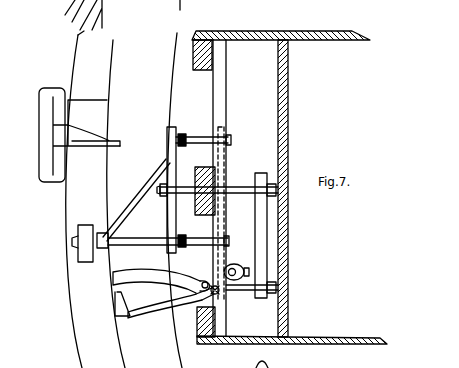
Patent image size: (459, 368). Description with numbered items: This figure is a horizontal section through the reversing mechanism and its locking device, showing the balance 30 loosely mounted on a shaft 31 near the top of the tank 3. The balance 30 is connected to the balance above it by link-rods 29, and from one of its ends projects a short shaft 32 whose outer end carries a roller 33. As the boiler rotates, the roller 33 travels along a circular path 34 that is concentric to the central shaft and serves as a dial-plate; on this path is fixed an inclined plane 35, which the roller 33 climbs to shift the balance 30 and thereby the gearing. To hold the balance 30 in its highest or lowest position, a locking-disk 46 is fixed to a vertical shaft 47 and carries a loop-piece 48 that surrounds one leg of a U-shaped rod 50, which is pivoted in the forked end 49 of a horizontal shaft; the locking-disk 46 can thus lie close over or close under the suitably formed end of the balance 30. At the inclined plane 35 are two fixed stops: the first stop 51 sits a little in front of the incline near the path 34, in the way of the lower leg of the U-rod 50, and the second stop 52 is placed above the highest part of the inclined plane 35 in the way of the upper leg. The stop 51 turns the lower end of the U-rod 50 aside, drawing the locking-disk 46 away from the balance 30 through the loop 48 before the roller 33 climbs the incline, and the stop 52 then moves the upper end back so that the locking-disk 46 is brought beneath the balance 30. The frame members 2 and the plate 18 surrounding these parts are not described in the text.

The top frame plate 18 is at (336, 31).
The frame 2 is at (199, 71).
The tank 3 is at (167, 103).
The inclined plane 35 is at (79, 135).
The second stop 52 is at (121, 143).
The balance 30 is at (166, 161).
The link-rods 29 is at (178, 135).
The shaft 31 is at (237, 192).
The roller 33 is at (90, 234).
The short shaft 32 is at (146, 244).
The locking-disk 46 is at (205, 278).
The vertical shaft 47 is at (236, 266).
The forked end 49 is at (221, 292).
The loop-piece 48 is at (197, 308).
The U-shaped rod 50 is at (165, 314).
The first stop 51 is at (125, 314).
The circular path 34 is at (95, 201).